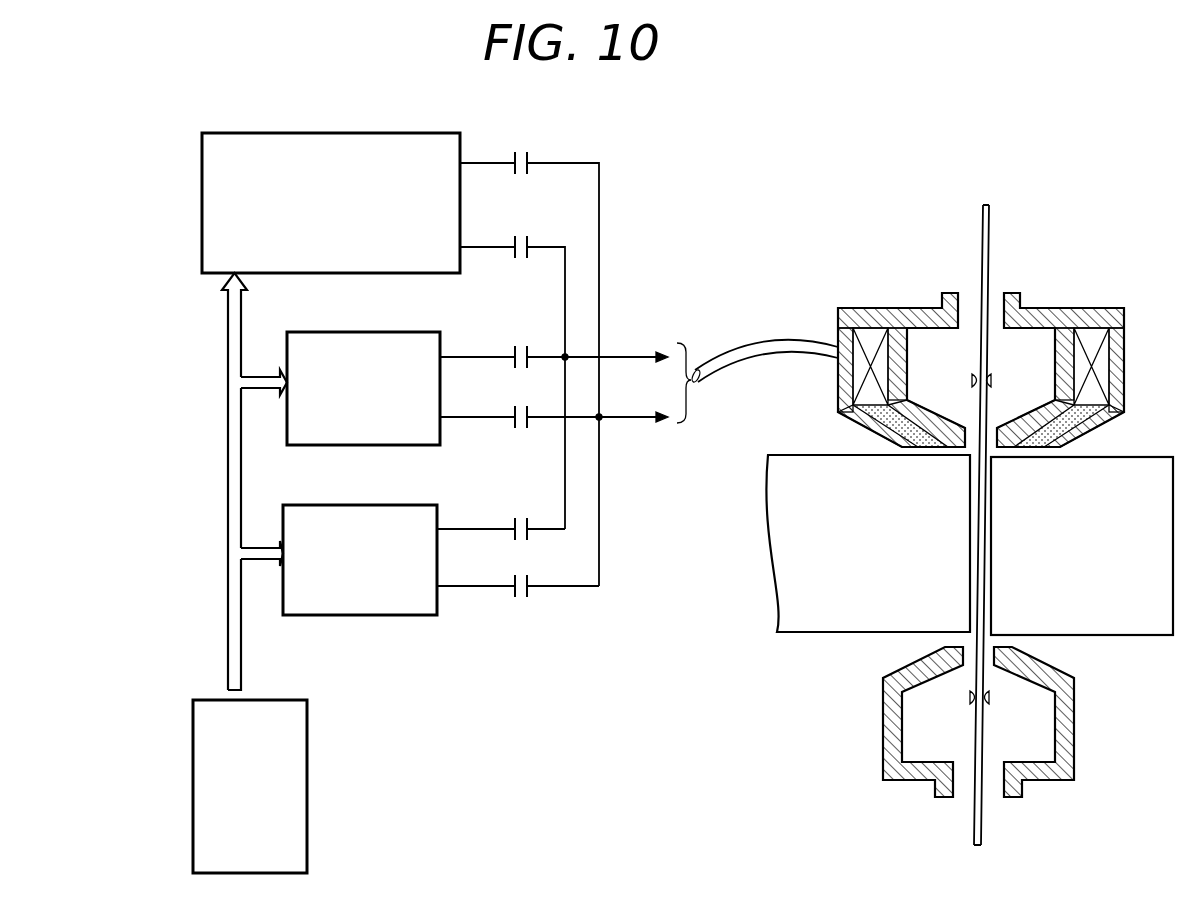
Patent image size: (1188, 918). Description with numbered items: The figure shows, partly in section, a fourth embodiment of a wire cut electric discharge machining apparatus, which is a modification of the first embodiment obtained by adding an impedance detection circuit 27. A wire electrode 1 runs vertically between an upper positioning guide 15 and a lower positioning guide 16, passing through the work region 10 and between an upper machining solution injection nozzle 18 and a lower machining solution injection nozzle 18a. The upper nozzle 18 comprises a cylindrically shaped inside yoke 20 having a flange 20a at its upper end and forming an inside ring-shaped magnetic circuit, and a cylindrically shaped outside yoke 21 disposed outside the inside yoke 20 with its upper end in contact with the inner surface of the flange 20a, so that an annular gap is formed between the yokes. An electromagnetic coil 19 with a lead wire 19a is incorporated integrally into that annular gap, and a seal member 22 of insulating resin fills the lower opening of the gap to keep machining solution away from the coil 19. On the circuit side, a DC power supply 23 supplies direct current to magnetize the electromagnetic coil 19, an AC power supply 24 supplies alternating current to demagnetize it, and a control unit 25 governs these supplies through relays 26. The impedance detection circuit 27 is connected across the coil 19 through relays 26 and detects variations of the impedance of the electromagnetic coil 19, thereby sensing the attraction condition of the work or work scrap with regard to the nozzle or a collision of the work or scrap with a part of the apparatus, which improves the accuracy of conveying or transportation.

The wire 1 is at (988, 249).
The guide blocks 10 is at (1127, 636).
The upper positioning guide 15 is at (995, 386).
The lower positioning guide 16 is at (990, 700).
The upper machining solution injection nozzle 18 is at (883, 303).
The lower machining solution injection nozzle 18a is at (883, 740).
The electromagnetic coil 19 is at (1108, 345).
The lead wire 19a is at (748, 343).
The inside yoke 20 is at (1057, 360).
The flange 20a is at (1092, 308).
The outside yoke 21 is at (1124, 376).
The gap region 22 is at (1048, 446).
The DC power supply 23 is at (403, 332).
The AC power supply 24 is at (398, 505).
The control unit 25 is at (282, 700).
The relay 26 is at (519, 574).
The impedance detection circuit 27 is at (408, 133).